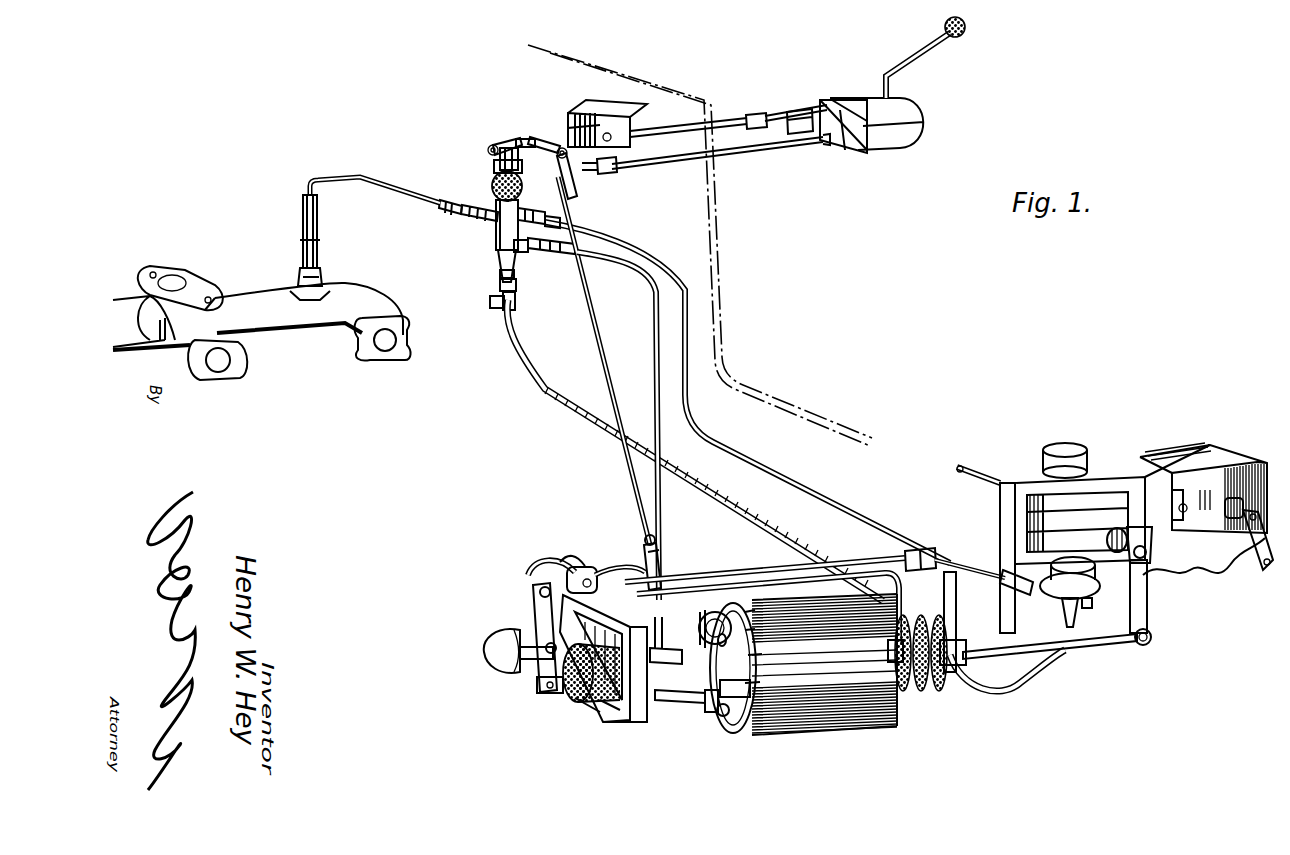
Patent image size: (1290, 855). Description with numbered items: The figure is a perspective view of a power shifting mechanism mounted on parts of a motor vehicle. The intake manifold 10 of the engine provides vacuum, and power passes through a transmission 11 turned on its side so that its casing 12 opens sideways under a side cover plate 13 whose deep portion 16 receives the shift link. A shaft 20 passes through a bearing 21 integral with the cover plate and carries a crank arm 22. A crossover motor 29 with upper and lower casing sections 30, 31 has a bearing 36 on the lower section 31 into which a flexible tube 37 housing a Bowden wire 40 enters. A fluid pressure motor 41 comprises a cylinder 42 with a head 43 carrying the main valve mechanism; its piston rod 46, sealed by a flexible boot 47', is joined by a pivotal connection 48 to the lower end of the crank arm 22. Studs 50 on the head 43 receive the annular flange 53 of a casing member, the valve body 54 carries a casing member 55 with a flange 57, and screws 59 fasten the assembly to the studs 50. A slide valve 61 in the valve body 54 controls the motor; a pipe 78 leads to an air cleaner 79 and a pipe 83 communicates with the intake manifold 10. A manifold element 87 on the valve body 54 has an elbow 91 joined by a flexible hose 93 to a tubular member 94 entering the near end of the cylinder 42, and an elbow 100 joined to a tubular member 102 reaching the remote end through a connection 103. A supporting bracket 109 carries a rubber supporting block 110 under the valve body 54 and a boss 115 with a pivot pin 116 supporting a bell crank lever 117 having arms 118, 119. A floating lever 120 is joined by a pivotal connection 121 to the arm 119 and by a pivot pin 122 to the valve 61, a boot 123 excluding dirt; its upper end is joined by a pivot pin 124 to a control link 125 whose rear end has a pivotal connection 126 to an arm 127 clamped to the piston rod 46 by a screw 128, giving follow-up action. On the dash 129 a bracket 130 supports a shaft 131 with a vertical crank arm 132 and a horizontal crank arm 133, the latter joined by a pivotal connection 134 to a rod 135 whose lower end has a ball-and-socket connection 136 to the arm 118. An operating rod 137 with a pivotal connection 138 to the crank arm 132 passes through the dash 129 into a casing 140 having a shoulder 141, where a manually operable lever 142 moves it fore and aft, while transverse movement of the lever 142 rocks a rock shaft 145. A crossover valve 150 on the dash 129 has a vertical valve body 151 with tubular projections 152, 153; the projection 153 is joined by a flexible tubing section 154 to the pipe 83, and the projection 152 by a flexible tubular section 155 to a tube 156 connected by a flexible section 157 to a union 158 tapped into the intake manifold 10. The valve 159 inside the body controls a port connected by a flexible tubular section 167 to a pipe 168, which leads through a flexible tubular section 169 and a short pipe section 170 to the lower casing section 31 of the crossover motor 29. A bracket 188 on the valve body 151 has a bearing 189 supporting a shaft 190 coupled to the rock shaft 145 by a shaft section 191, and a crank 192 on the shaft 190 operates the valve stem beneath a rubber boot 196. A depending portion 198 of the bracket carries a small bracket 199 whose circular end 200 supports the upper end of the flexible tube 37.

The intake manifold 10 is at (250, 298).
The transmission 11 is at (1100, 465).
The casing 12 is at (1017, 470).
The side cover plate 13 is at (1088, 468).
The deep portion 16 is at (1058, 498).
The shaft 20 is at (1152, 552).
The bearing 21 is at (1107, 536).
The crank arm 22 is at (1148, 605).
The crossover motor 29 is at (1099, 588).
The upper casing section 30 is at (1096, 572).
The lower casing section 31 is at (1092, 605).
The bearing 36 is at (1064, 612).
The flexible tube 37 is at (526, 340).
The Bowden wire 40 is at (516, 286).
The fluid pressure motor 41 is at (830, 730).
The cylinder 42 is at (816, 630).
The head 43 is at (754, 656).
The piston rod 46 is at (1040, 651).
The flexible boot 47' is at (921, 666).
The pivotal connection 48 is at (1150, 645).
The studs 50 is at (748, 614).
The annular flange 53 is at (732, 644).
The valve body 54 is at (716, 712).
The casing member 55 is at (748, 632).
The annular flange 57 is at (722, 698).
The screws 59 is at (708, 614).
The valve 61 is at (567, 694).
The pipe 78 is at (540, 660).
The air cleaner 79 is at (500, 631).
The pipe 83 is at (656, 538).
The manifold element 87 is at (637, 722).
The elbow 91 is at (665, 703).
The flexible hose 93 is at (712, 714).
The tubular member 94 is at (750, 684).
The elbow 100 is at (660, 664).
The tubular member 102 is at (748, 576).
The connection 103 is at (888, 652).
The supporting bracket 109 is at (615, 724).
The resilient supporting block 110 is at (600, 706).
The boss 115 is at (585, 567).
The pivot pin 116 is at (610, 604).
The bell crank lever 117 is at (566, 558).
The arm 118 is at (630, 568).
The arm 119 is at (536, 604).
The floating lever 120 is at (540, 591).
The pivotal connection 121 is at (557, 646).
The pivot pin 122 is at (540, 692).
The boot 123 is at (575, 702).
The pivot pin 124 is at (530, 570).
The control link 125 is at (702, 586).
The pivotal connection 126 is at (930, 571).
The arm 127 is at (957, 612).
The screw 128 is at (962, 672).
The dash 129 is at (724, 272).
The bracket 130 is at (588, 102).
The shaft 131 is at (580, 112).
The crank arm 132 is at (553, 144).
The crank arm 133 is at (609, 173).
The pivotal connection 134 is at (522, 140).
The rod 135 is at (606, 340).
The connection 136 is at (661, 560).
The operating rod 137 is at (740, 152).
The pivotal connection 138 is at (578, 192).
The casing 140 is at (924, 120).
The shoulder 141 is at (862, 153).
The manually operable lever 142 is at (914, 58).
The rock shaft 145 is at (778, 113).
The crossover valve 150 is at (496, 246).
The valve body 151 is at (522, 252).
The tubular projection 152 is at (478, 219).
The tubular projection 153 is at (582, 232).
The flexible tubing section 154 is at (550, 255).
The flexible tubular section 155 is at (452, 202).
The tube 156 is at (402, 182).
The flexible section 157 is at (319, 228).
The union 158 is at (323, 279).
The valve 159 is at (500, 262).
The flexible tubular section 167 is at (553, 215).
The pipe 168 is at (652, 262).
The flexible tubular section 169 is at (985, 571).
The short pipe section 170 is at (1017, 597).
The bracket 188 is at (494, 172).
The bearing 189 is at (500, 142).
The shaft 190 is at (487, 150).
The shaft section 191 is at (686, 128).
The crank 192 is at (498, 160).
The rubber boot 196 is at (493, 189).
The depending portion 198 is at (500, 276).
The small bracket 199 is at (492, 302).
The circular end 200 is at (516, 302).